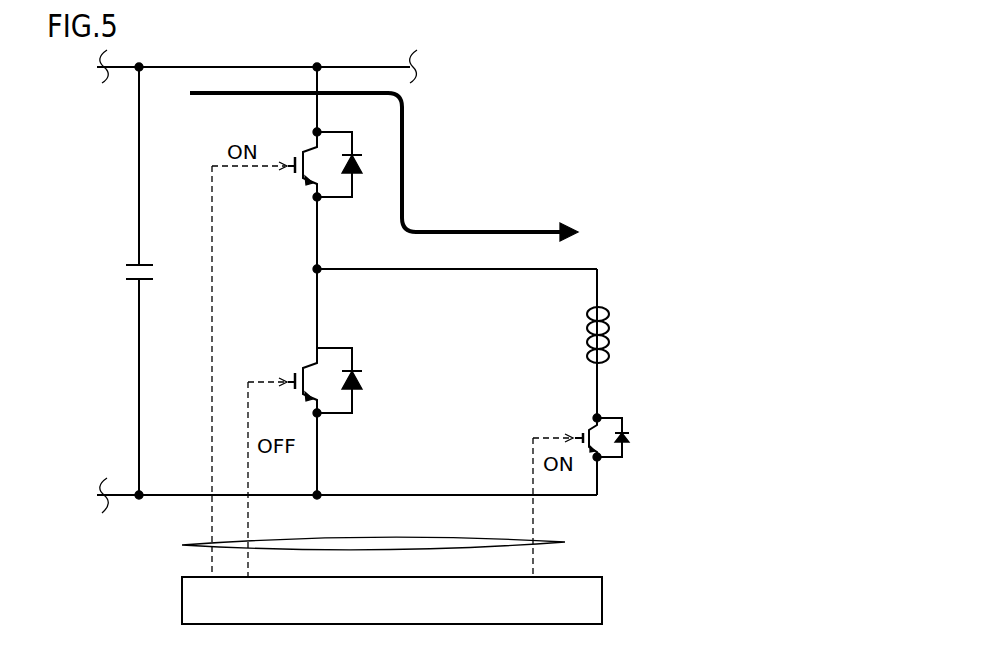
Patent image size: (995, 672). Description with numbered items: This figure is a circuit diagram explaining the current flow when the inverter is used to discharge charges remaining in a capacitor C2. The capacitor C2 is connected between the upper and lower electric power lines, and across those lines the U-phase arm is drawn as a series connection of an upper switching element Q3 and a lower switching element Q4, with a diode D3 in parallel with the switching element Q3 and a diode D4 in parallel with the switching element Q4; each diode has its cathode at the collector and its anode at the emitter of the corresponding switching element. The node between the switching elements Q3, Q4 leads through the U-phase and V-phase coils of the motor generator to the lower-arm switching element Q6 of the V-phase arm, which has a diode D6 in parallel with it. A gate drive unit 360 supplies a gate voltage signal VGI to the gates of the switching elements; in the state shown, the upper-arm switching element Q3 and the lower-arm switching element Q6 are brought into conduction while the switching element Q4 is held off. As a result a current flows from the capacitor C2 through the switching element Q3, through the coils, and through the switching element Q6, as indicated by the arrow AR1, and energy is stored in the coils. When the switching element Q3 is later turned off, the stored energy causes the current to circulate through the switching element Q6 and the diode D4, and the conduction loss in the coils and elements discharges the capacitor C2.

The capacitor C2 is at (130, 257).
The switching element Q3 is at (300, 164).
The diode D3 is at (350, 166).
The switching element Q4 is at (300, 379).
The diode D4 is at (355, 380).
The switching element Q6 is at (579, 433).
The diode D6 is at (630, 437).
The arrow AR1 is at (480, 228).
The gate voltage signal VGI is at (395, 546).
The gate drive unit 360 is at (602, 602).